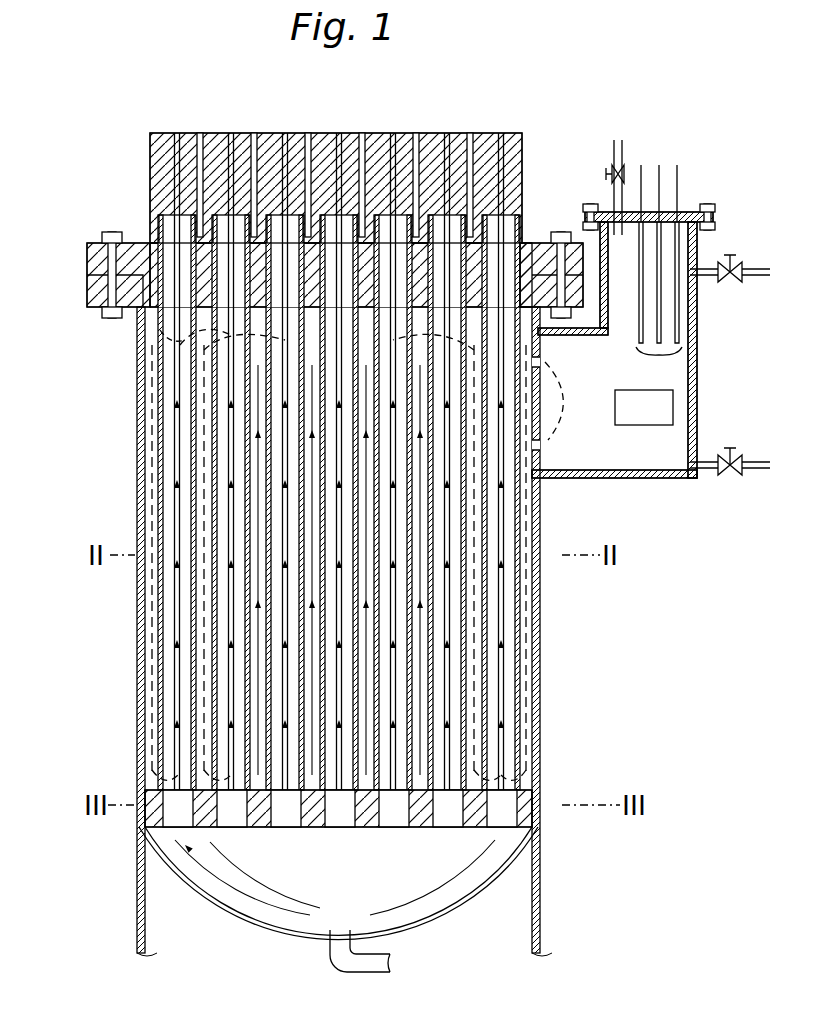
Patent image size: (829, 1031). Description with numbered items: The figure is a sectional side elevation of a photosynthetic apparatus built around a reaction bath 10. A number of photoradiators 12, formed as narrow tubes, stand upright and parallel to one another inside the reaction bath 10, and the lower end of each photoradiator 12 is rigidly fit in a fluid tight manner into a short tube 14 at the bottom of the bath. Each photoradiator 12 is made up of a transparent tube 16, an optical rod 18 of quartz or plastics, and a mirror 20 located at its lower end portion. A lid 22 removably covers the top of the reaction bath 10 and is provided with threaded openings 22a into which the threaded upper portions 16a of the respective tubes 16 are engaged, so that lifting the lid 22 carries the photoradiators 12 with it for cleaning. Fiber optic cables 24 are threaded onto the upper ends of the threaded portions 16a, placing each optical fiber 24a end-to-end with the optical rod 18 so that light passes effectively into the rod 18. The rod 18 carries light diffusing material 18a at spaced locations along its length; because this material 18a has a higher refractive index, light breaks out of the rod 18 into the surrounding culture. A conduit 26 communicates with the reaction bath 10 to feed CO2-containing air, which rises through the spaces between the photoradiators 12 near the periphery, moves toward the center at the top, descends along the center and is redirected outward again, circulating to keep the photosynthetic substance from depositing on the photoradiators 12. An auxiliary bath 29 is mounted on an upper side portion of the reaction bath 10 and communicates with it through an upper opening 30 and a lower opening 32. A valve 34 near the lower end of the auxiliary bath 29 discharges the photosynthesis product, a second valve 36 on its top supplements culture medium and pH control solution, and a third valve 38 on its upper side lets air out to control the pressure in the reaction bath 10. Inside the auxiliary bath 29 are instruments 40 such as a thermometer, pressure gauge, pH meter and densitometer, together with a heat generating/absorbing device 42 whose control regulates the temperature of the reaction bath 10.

The reaction bath 10 is at (137, 505).
The photoradiator 12 is at (178, 377).
The short tube 14 is at (368, 828).
The transparent tube 16 is at (160, 334).
The threaded upper portion 16a is at (308, 145).
The optical rod 18 is at (445, 460).
The light diffusing material 18a is at (190, 410).
The mirror 20 is at (160, 785).
The lid 22 is at (90, 245).
The threaded opening 22a is at (145, 248).
The fiber optic cable 24 is at (150, 132).
The optical fiber 24a is at (150, 168).
The conduit 26 is at (360, 975).
The auxiliary bath 29 is at (684, 200).
The upper opening 30 is at (540, 361).
The lower opening 32 is at (540, 446).
The valve 34 is at (731, 448).
The second valve 36 is at (612, 172).
The third valve 38 is at (733, 262).
The instruments 40 is at (659, 368).
The heat generating/absorbing device 42 is at (650, 425).